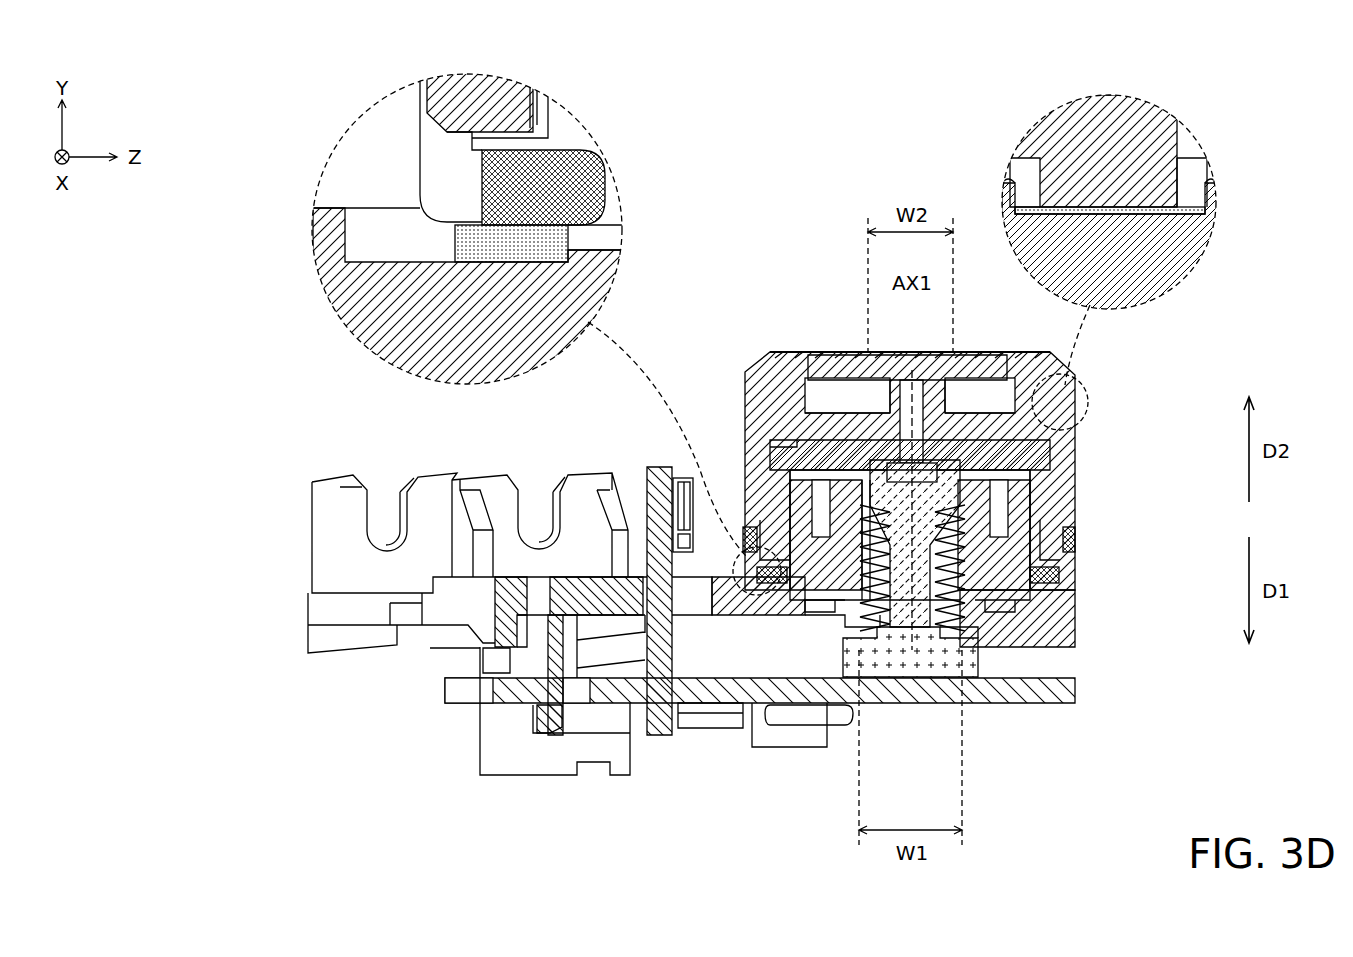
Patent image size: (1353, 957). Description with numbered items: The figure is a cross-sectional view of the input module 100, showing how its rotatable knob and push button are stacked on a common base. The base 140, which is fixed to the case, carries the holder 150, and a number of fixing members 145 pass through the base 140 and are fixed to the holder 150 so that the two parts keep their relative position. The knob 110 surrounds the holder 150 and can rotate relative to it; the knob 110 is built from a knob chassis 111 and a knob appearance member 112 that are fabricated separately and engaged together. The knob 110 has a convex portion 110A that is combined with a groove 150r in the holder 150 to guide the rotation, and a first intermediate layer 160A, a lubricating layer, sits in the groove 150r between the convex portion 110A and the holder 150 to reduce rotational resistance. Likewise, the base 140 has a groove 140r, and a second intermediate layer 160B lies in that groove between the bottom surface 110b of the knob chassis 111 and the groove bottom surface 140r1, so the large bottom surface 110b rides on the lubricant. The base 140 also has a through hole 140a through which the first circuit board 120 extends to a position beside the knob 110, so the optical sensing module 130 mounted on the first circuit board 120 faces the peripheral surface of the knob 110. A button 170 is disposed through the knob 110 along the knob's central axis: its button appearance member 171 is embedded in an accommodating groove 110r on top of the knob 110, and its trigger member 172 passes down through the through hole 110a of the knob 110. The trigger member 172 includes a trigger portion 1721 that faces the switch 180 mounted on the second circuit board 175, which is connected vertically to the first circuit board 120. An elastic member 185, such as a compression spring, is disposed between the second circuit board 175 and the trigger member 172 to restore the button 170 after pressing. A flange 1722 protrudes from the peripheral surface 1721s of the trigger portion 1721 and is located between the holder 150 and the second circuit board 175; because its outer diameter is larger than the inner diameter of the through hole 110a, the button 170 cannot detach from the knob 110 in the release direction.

The input module 100 is at (1250, 88).
The knob 110 is at (1060, 125).
The convex portion 110A is at (1060, 170).
The through hole 110a is at (950, 380).
The bottom surface 110b is at (505, 240).
The accommodating groove 110r is at (1006, 387).
The knob chassis 111 is at (590, 180).
The knob appearance member 112 is at (1062, 548).
The first circuit board 120 is at (660, 735).
The optical sensing module 130 is at (684, 478).
The base 140 is at (1065, 630).
The through hole 140a is at (704, 610).
The groove 140r is at (424, 244).
The groove bottom surface 140r1 is at (540, 250).
The fixing member 145 is at (848, 640).
The holder 150 is at (1160, 255).
The groove 150r is at (1200, 180).
The first intermediate layer 160A is at (1180, 150).
The second intermediate layer 160B is at (472, 245).
The button 170 is at (890, 433).
The button appearance member 171 is at (908, 353).
The trigger member 172 is at (765, 356).
The trigger portion 1721 is at (905, 640).
The peripheral surface 1721s is at (1075, 535).
The flange 1722 is at (1010, 520).
The second circuit board 175 is at (1065, 692).
The switch 180 is at (918, 660).
The elastic member 185 is at (958, 640).